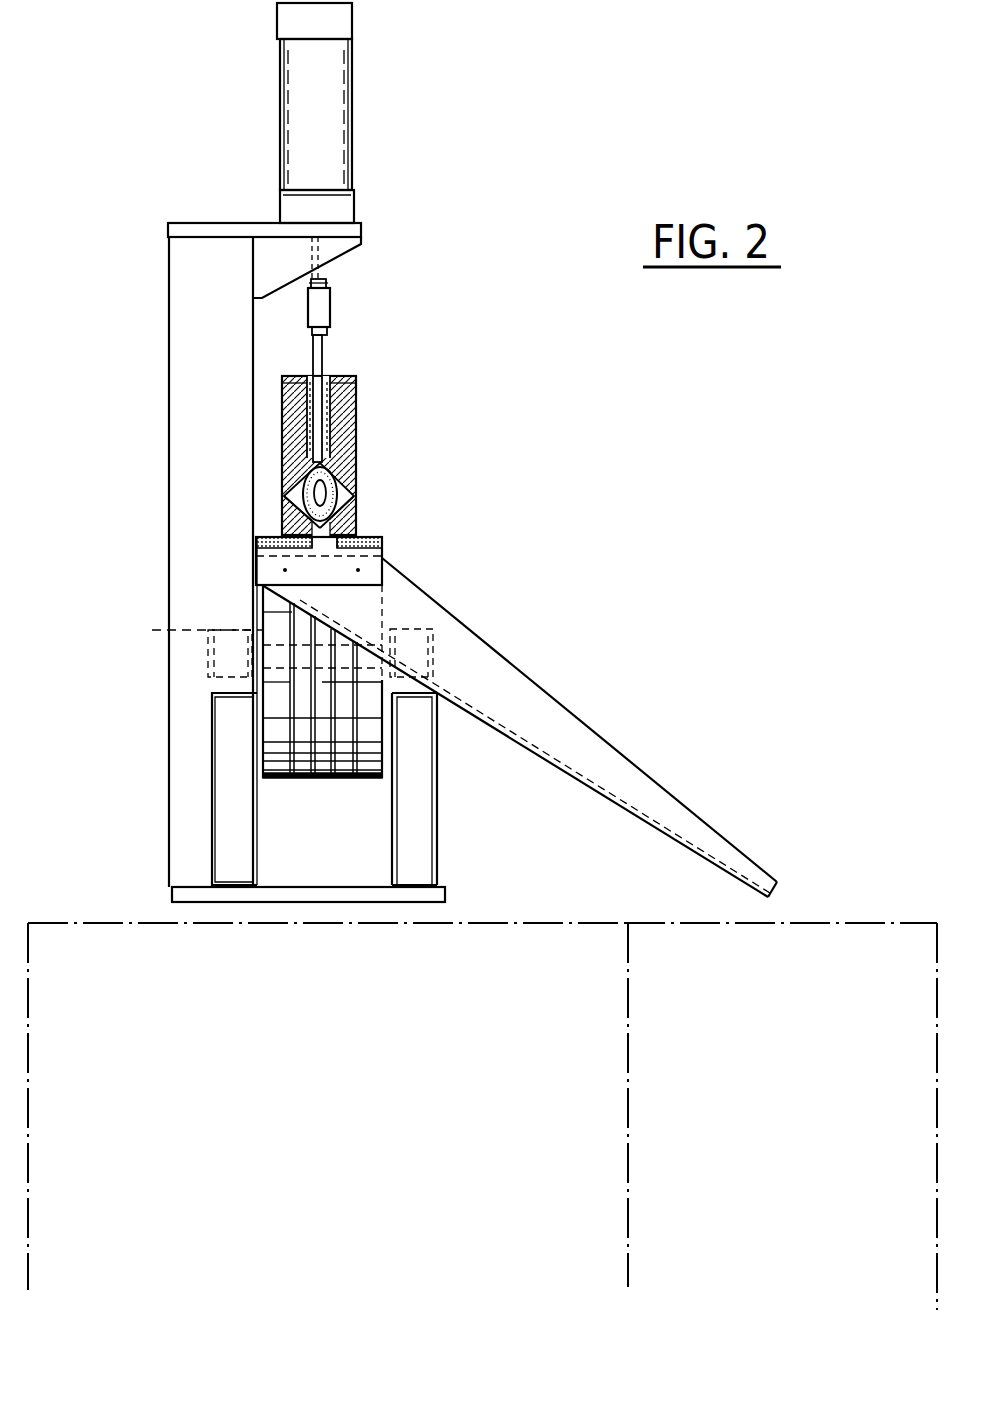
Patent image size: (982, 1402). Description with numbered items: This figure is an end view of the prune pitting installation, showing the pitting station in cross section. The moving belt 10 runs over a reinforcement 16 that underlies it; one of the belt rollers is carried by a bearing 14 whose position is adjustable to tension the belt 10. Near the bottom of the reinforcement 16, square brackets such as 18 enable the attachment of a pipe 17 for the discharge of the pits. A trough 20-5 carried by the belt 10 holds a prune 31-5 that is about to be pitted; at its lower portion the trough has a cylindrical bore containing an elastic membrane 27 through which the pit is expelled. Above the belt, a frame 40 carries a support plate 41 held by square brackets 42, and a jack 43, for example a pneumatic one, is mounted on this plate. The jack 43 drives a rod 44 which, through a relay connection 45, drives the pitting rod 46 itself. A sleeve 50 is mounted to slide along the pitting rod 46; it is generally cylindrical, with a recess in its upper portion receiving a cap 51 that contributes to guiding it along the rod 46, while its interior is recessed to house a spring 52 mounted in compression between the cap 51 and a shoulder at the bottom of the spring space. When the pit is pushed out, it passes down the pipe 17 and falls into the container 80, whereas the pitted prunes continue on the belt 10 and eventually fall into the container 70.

The moving belt 10 is at (272, 524).
The bearing 14 is at (278, 644).
The reinforcement 16 is at (245, 545).
The pipe 17 is at (566, 738).
The square bracket 18 is at (372, 570).
The trough 20-5 is at (357, 518).
The elastic membrane 27 is at (318, 540).
The prune 31-5 is at (332, 492).
The frame 40 is at (175, 338).
The support plate 41 is at (212, 226).
The square brackets 42 is at (345, 242).
The jack 43 is at (330, 117).
The rod 44 is at (322, 279).
The relay connection 45 is at (322, 307).
The pitting rod 46 is at (323, 352).
The sleeve 50 is at (286, 430).
The cap 51 is at (357, 388).
The spring 52 is at (327, 430).
The container 70 is at (98, 923).
The container 80 is at (813, 920).